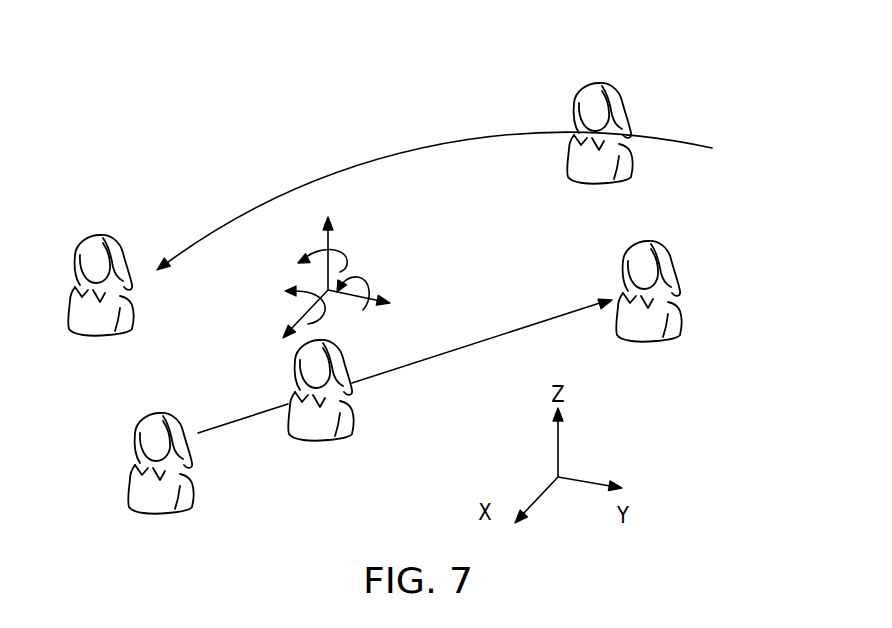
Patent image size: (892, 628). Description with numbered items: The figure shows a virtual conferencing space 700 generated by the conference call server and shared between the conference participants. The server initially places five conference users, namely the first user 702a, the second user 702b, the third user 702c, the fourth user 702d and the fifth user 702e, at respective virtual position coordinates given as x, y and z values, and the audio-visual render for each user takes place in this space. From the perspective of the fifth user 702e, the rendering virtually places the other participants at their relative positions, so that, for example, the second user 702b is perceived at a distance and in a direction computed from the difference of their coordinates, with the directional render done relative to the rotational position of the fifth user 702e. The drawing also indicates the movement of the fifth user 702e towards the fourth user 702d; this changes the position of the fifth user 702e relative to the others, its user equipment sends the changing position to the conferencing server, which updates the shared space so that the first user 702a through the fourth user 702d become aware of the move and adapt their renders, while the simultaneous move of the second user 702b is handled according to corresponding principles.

The virtual conferencing space 700 is at (192, 94).
The conference user U1 702a is at (130, 480).
The conference user U2 702b is at (599, 83).
The conference user U3 702c is at (99, 234).
The conference user U4 702d is at (683, 318).
The conference user U5 702e is at (355, 416).